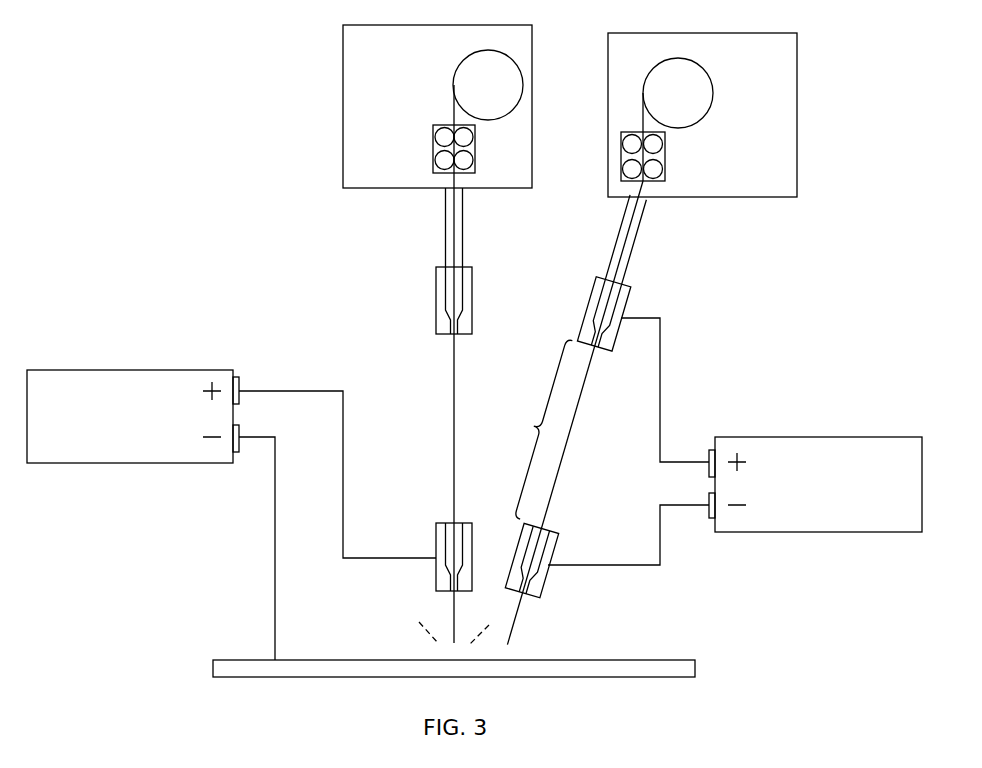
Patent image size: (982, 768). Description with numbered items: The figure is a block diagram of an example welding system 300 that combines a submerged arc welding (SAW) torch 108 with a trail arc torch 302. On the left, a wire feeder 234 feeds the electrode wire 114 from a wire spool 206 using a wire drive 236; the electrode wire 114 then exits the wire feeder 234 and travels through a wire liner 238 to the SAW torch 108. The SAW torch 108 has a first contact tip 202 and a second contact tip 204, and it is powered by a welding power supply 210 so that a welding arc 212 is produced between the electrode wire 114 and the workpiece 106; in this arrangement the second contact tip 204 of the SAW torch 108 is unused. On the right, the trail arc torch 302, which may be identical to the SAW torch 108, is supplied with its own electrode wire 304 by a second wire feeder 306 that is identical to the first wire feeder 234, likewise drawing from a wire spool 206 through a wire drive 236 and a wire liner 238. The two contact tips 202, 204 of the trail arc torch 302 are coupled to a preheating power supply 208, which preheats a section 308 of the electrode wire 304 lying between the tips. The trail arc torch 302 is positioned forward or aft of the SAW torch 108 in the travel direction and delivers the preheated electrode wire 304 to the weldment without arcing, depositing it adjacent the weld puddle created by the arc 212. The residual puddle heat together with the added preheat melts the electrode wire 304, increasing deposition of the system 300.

The welding system 300 is at (97, 116).
The wire feeder 234 is at (342, 51).
The wire feeder 306 is at (608, 85).
The wire spool 206 is at (473, 57).
The electrode wire 114 is at (453, 102).
The wire drive 236 is at (433, 126).
The wire liner 238 is at (445, 217).
The SAW torch 108 is at (370, 226).
The second contact tip 204 is at (436, 267).
The trail arc torch 302 is at (675, 269).
The welding power supply 210 is at (62, 370).
The section of the electrode wire 308 is at (522, 431).
The electrode wire 304 is at (561, 470).
The preheating power supply 208 is at (825, 437).
The first contact tip 202 is at (436, 546).
The welding arc 212 is at (425, 640).
The workpiece 106 is at (213, 677).